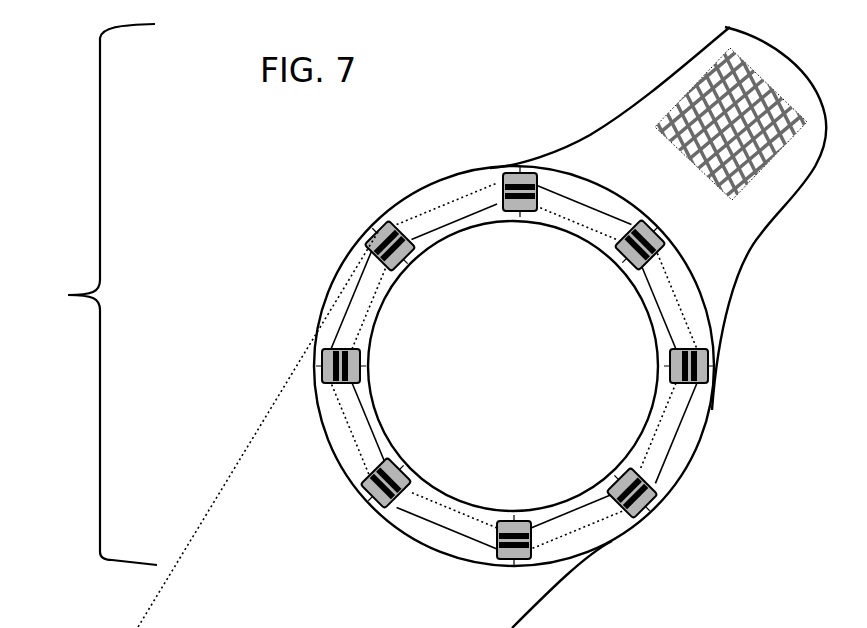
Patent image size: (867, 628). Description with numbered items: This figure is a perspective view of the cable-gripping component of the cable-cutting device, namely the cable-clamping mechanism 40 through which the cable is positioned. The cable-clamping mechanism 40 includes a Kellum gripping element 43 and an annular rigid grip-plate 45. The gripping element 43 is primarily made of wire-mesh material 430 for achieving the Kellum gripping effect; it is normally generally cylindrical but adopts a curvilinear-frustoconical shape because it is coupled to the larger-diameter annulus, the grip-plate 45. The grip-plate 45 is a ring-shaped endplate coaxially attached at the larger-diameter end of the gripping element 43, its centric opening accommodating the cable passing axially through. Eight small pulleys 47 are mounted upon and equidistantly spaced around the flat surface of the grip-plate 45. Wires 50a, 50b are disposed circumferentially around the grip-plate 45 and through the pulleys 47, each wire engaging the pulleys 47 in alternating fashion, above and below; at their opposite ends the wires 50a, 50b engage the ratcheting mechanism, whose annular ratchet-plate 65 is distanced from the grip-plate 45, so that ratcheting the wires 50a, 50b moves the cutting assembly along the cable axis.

The cable-clamping mechanism 40 is at (70, 295).
The gripping element 43 is at (636, 147).
The wire-mesh material 430 is at (717, 180).
The grip-plate 45 is at (682, 453).
The pulleys 47 is at (367, 238).
The wire 50a is at (244, 462).
The wire 50b is at (522, 612).
The ratchet-plate 65 is at (332, 627).